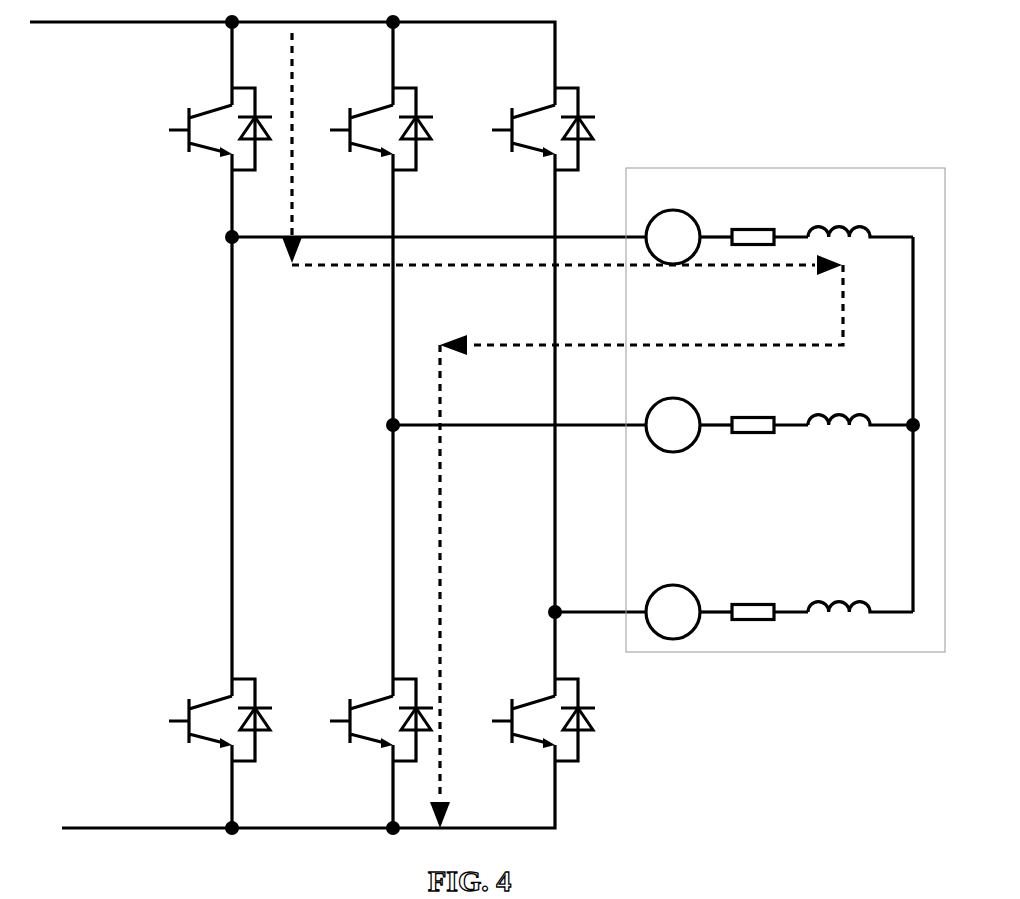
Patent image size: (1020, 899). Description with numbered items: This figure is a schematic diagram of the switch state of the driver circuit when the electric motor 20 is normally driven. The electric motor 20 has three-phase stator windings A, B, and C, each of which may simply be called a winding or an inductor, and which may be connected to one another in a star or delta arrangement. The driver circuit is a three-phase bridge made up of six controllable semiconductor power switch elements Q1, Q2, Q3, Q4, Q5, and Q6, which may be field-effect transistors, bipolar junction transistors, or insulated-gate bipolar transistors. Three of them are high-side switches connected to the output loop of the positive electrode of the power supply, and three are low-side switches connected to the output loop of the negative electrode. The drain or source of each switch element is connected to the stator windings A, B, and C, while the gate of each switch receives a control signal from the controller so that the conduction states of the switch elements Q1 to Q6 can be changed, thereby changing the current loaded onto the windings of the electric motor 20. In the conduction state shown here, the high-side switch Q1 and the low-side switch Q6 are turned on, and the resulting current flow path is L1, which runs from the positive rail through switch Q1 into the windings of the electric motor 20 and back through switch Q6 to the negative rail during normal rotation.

The electric motor 20 is at (785, 167).
The high-side switch Q1 is at (216, 117).
The power switch element Q2 is at (540, 708).
The power switch element Q3 is at (377, 117).
The power switch element Q4 is at (216, 708).
The power switch element Q5 is at (540, 117).
The low-side switch Q6 is at (377, 708).
The stator winding A is at (418, 238).
The stator winding B is at (500, 427).
The stator winding C is at (581, 615).
The current flow path L1 is at (562, 430).